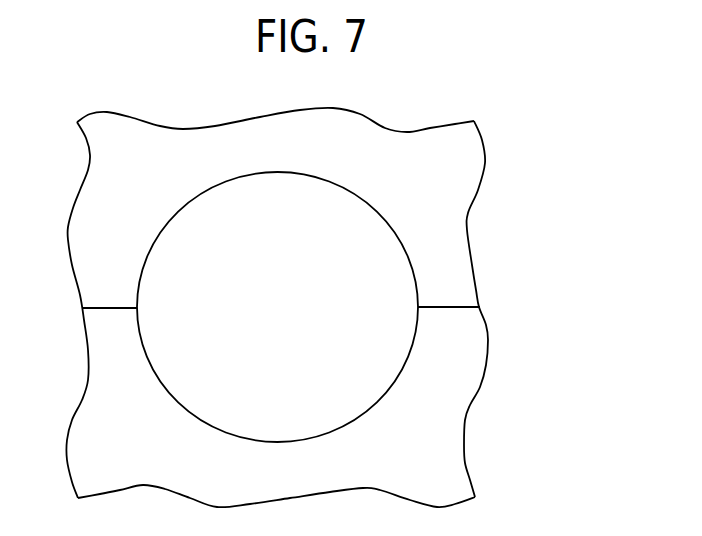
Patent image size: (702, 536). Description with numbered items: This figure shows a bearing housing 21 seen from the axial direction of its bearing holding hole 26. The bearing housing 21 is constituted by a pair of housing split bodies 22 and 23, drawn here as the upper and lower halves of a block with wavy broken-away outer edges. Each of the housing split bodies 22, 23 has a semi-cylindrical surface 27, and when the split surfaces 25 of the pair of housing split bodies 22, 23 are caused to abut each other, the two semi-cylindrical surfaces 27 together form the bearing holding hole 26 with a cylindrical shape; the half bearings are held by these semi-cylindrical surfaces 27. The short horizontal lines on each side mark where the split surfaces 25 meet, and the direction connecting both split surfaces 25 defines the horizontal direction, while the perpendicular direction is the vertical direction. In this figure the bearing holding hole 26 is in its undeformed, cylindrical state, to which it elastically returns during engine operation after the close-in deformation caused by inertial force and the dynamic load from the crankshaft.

The bearing housing 21 is at (465, 152).
The housing split body 22 is at (452, 223).
The housing split body 23 is at (458, 405).
The split surfaces 25 is at (97, 305).
The bearing holding hole 26 is at (203, 247).
The semi-cylindrical surfaces 27 is at (350, 192).